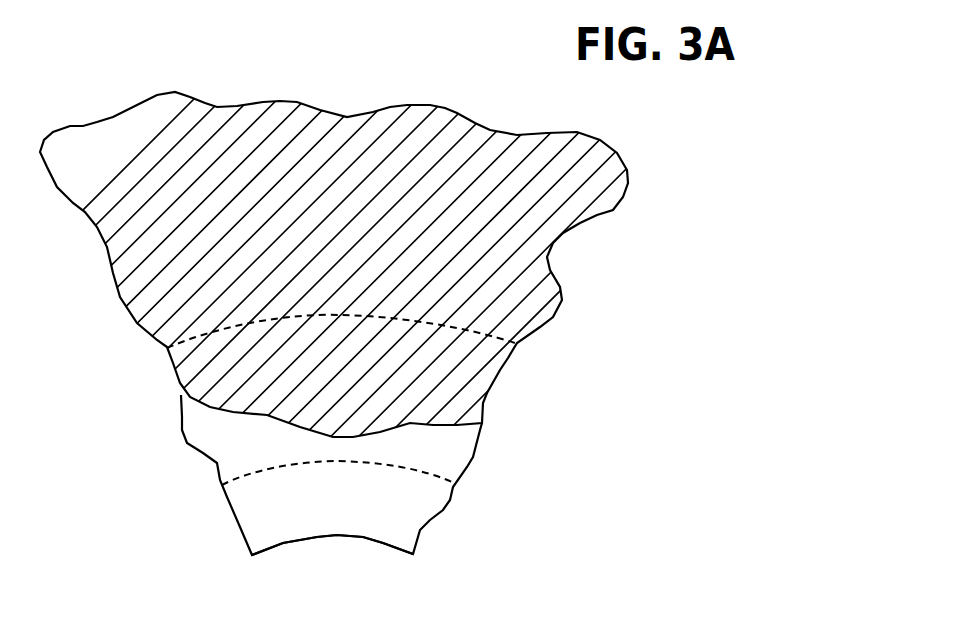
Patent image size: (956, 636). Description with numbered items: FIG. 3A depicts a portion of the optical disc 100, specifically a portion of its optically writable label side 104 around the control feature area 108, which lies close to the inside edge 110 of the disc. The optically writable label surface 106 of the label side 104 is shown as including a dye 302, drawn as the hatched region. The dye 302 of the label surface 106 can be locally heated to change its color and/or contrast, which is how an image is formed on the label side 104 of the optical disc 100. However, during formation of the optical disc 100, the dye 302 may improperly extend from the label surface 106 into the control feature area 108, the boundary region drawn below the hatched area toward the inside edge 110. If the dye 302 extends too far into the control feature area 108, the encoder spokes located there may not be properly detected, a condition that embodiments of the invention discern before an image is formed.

The optical disc 100 is at (478, 346).
The optically writable label side 104 is at (410, 522).
The optically writable label surface 106 is at (613, 145).
The control feature area 108 is at (460, 458).
The inside edge 110 is at (362, 538).
The dye 302 is at (369, 253).